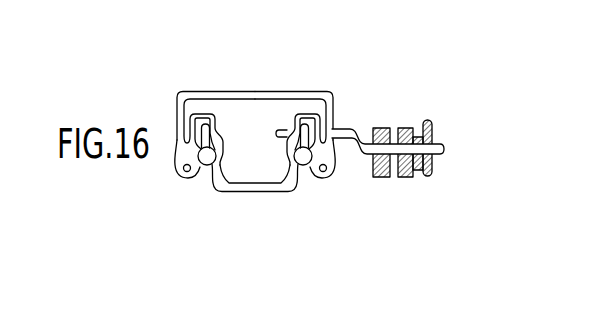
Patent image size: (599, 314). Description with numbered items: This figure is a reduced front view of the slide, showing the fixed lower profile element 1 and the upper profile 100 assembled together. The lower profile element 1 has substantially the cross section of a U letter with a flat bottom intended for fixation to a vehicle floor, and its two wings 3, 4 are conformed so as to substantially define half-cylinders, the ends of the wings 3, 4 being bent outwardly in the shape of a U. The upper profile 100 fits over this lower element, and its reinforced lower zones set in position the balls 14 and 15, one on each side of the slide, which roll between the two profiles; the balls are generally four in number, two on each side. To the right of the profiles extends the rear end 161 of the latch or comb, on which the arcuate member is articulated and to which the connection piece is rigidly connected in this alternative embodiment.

The fixed lower profile element 1 is at (242, 170).
The wing 3 is at (213, 120).
The wing 4 is at (285, 145).
The ball 14 is at (207, 168).
The ball 15 is at (306, 170).
The upper profile 100 is at (300, 92).
The rear end of the latch or comb 161 is at (435, 143).